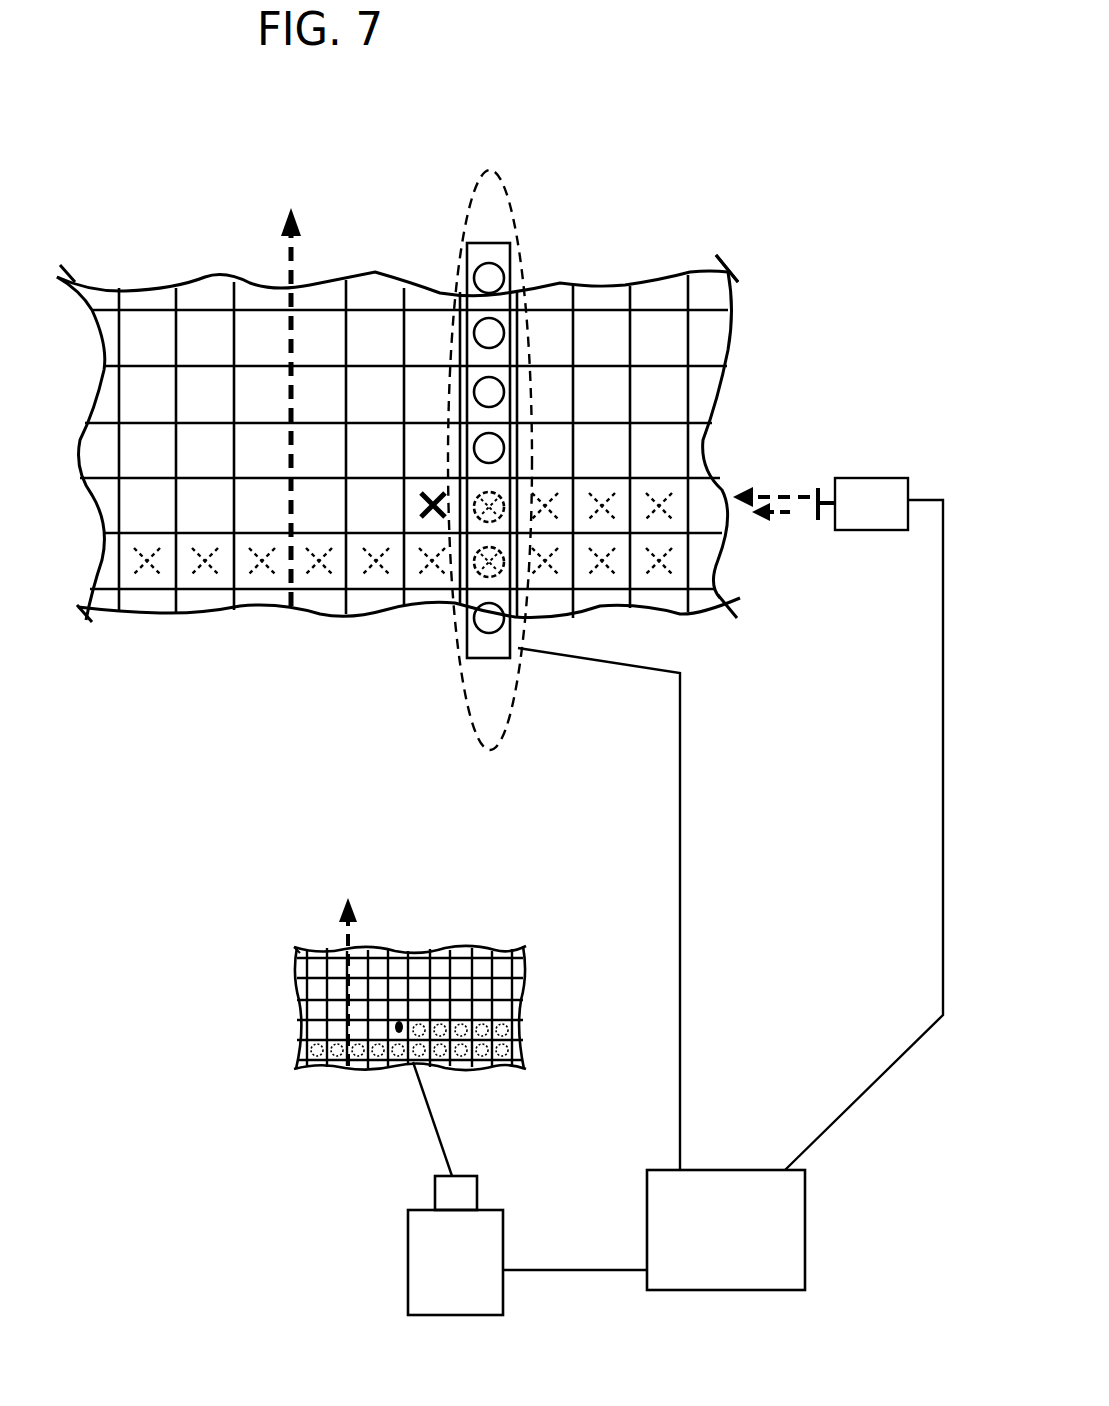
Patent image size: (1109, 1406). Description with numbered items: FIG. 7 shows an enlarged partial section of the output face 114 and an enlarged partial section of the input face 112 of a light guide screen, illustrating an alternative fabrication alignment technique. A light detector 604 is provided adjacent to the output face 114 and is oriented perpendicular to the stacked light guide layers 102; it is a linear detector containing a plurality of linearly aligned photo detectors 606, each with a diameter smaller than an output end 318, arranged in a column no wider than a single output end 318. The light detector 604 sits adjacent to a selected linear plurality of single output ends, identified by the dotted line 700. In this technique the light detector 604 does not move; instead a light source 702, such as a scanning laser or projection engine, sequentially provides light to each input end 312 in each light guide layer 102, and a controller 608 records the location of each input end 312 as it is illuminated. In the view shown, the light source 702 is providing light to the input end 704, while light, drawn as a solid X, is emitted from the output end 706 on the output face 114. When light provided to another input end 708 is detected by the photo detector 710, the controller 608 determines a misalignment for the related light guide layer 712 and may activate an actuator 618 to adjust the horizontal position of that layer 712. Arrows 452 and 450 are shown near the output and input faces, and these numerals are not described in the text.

The stacked light guide layers 102 is at (730, 317).
The output face 114 is at (732, 264).
The output end 318 is at (151, 326).
The web travel direction 452 is at (291, 212).
The light detector 604 is at (468, 268).
The photo detectors 606 is at (490, 268).
The dotted line 700 is at (465, 682).
The output end 706 is at (420, 522).
The photo detector 710 is at (490, 521).
The related light guide layer 712 is at (732, 481).
The actuator 618 is at (845, 522).
The controller 608 is at (703, 1253).
The light source 702 is at (414, 1262).
The input end 704 is at (398, 1032).
The another input end 708 is at (423, 1023).
The input end 312 is at (314, 1012).
The input face 112 is at (297, 984).
The second web travel direction 450 is at (347, 903).